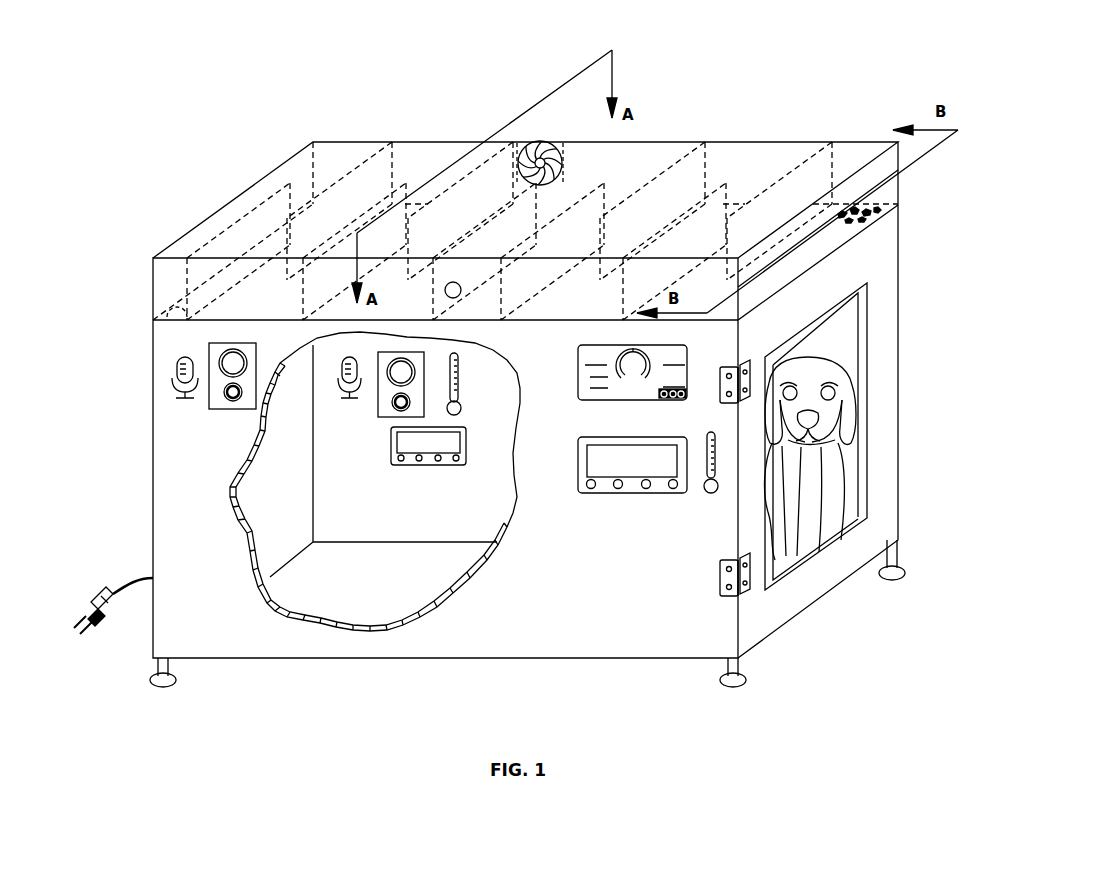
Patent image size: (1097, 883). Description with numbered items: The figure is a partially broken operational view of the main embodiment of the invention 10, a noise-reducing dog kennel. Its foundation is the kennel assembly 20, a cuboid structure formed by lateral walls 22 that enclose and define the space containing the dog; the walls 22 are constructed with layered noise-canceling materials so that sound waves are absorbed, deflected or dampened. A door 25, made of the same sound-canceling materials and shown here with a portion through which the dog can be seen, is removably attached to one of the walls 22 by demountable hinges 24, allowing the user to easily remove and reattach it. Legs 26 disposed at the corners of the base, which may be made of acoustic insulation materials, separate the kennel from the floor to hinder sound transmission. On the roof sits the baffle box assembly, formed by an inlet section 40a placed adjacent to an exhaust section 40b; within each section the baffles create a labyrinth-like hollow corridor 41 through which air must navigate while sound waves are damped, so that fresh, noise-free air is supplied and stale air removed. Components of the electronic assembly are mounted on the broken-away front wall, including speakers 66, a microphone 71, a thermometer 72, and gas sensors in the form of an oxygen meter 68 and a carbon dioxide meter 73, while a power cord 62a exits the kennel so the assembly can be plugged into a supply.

The main embodiment 10 is at (212, 172).
The kennel assembly 20 is at (580, 660).
The walls 22 is at (167, 478).
The hinges 24 is at (728, 598).
The door 25 is at (898, 325).
The legs 26 is at (163, 690).
The inlet section 40a is at (200, 215).
The exhaust section 40b is at (858, 140).
The hollow corridor 41 is at (300, 207).
The power cord 62a is at (120, 582).
The speakers 66 is at (233, 410).
The oxygen meter 68 is at (583, 390).
The microphone 71 is at (177, 365).
The thermometer 72 is at (456, 382).
The carbon dioxide meter 73 is at (427, 467).